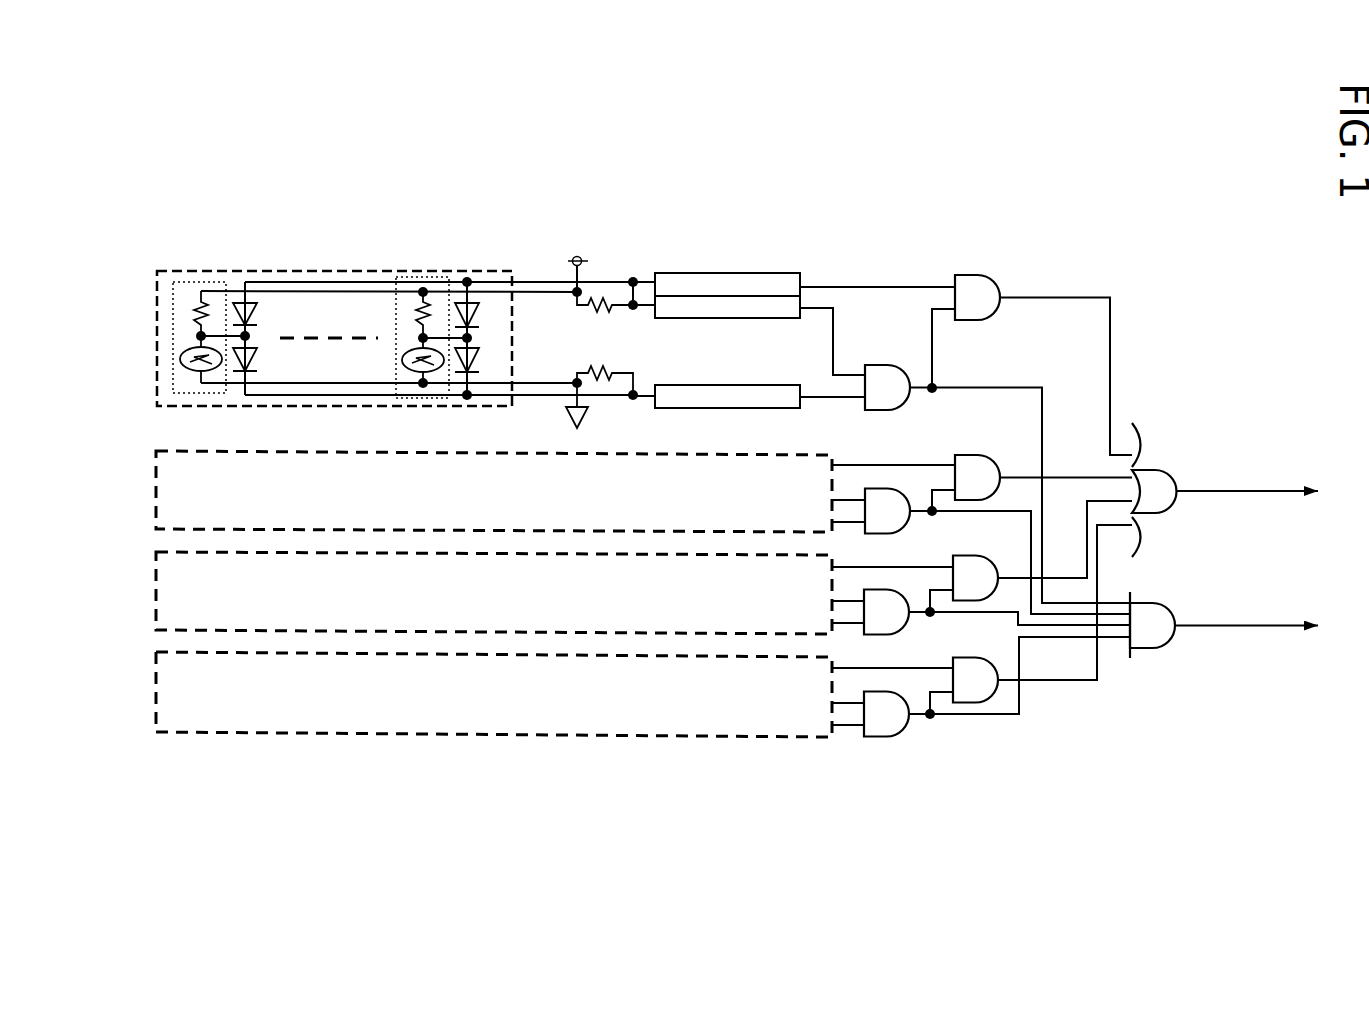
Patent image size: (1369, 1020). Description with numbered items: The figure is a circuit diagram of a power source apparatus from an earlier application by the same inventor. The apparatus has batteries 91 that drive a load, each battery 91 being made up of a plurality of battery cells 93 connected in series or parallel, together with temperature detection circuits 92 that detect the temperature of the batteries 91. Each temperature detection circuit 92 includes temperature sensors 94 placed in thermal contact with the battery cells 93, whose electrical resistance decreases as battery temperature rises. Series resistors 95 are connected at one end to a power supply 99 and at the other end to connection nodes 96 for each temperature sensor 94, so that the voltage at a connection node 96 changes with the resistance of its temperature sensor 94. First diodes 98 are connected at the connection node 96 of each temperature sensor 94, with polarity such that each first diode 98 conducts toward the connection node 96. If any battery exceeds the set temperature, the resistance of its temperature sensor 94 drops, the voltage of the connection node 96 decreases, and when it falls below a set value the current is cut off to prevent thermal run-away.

The battery 91 is at (304, 271).
The temperature detection circuit 92 is at (703, 252).
The battery cell 93 is at (168, 293).
The temperature sensor 94 is at (185, 362).
The series resistor 95 is at (196, 318).
The connection node 96 is at (198, 337).
The first diode 98 is at (255, 312).
The power supply 99 is at (576, 256).